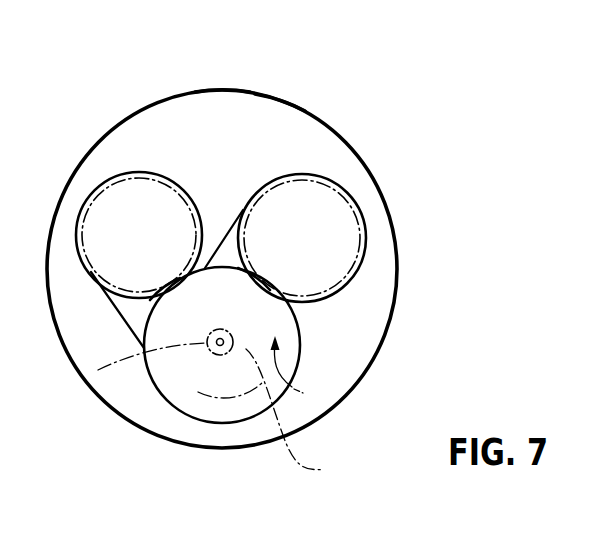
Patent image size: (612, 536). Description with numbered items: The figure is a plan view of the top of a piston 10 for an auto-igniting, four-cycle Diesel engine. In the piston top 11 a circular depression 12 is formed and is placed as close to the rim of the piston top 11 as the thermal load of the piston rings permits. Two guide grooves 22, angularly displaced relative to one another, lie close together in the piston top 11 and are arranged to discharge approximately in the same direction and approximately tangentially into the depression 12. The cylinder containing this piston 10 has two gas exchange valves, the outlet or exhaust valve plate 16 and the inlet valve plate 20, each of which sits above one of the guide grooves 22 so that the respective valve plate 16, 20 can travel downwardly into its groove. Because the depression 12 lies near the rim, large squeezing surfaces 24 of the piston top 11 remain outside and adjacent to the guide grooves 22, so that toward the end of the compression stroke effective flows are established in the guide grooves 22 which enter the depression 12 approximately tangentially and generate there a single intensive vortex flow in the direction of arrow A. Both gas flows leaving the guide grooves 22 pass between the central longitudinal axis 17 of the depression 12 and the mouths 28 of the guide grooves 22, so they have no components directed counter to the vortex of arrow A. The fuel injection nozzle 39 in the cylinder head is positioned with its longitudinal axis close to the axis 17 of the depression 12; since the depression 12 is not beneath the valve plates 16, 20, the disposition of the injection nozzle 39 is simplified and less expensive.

The piston 10 is at (352, 131).
The piston top 11 is at (263, 112).
The squeezing surface 24 is at (216, 114).
The guide grooves 22 is at (143, 203).
The inlet valve plate 20 is at (117, 178).
The outlet valve plate 16 is at (332, 207).
The depression 12 is at (185, 377).
The mouths of the guide grooves 28 is at (158, 299).
The central longitudinal axis of the depression 17 is at (98, 370).
The fuel injection nozzle 39 is at (302, 419).
The arrow indicating vortex flow A is at (300, 369).